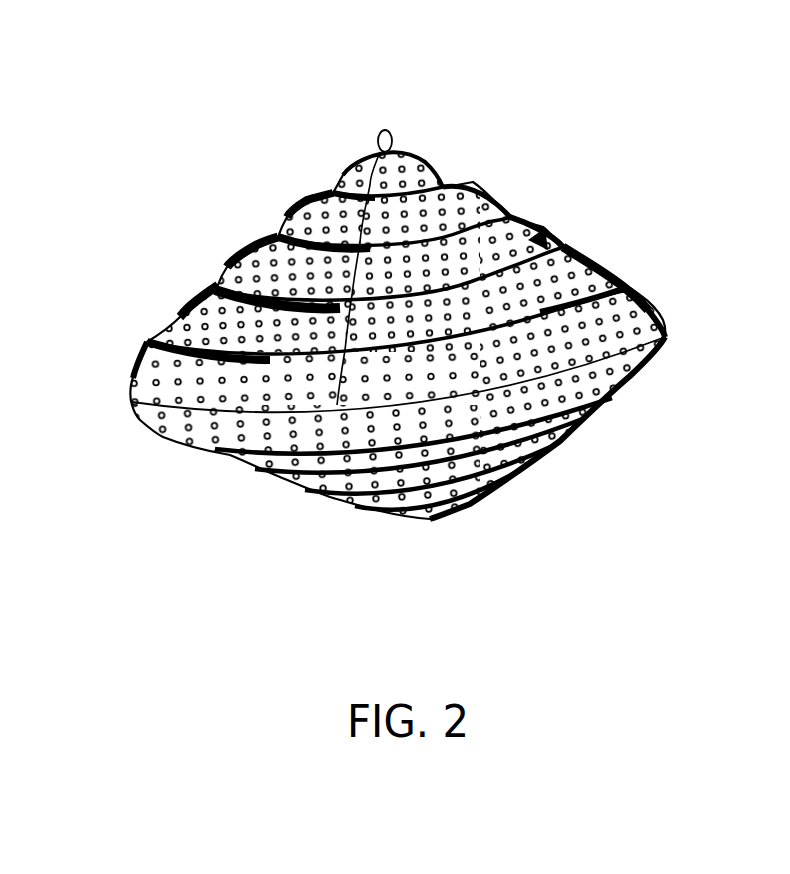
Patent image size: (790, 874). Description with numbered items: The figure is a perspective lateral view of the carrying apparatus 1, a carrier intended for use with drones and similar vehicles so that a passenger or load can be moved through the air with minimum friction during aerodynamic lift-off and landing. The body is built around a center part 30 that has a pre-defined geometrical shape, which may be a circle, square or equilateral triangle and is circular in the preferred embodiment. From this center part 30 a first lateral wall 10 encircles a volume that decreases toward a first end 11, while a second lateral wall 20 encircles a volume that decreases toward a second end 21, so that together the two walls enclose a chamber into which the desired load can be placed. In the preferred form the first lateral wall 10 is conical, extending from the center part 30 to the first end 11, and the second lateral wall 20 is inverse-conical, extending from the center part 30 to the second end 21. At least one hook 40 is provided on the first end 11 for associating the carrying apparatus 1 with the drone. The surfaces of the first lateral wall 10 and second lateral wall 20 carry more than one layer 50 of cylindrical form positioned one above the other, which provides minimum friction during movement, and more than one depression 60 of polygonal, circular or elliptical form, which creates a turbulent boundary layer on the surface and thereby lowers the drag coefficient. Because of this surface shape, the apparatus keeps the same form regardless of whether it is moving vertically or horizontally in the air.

The carrying apparatus 1 is at (395, 326).
The first lateral wall 10 is at (530, 250).
The first end 11 is at (376, 147).
The second lateral wall 20 is at (270, 417).
The second end 21 is at (413, 525).
The center part 30 is at (130, 392).
The hook 40 is at (384, 152).
The layer 50 is at (216, 300).
The depression 60 is at (420, 156).